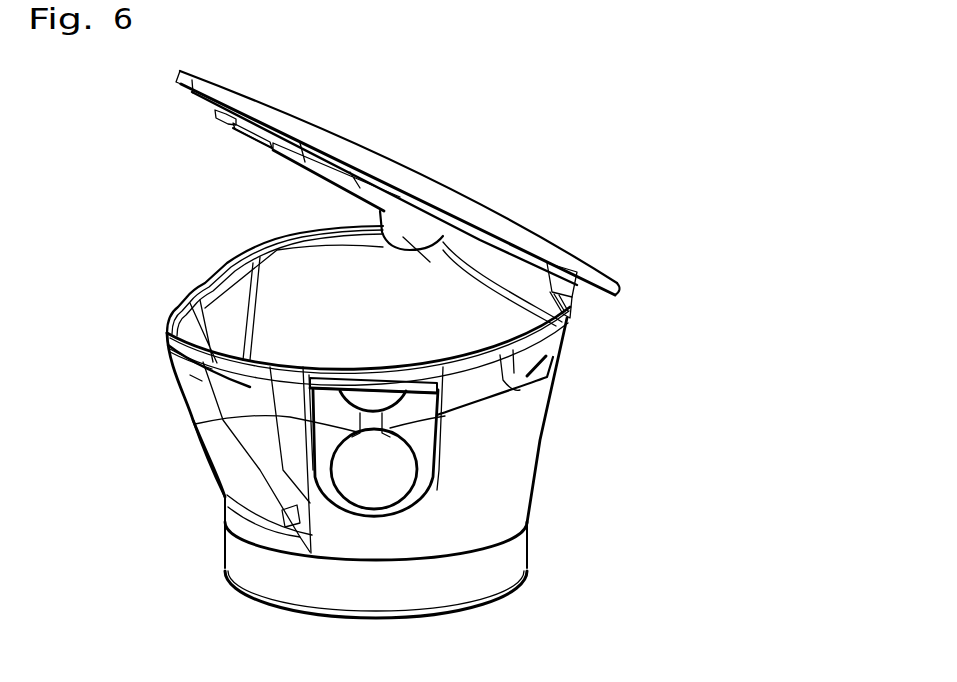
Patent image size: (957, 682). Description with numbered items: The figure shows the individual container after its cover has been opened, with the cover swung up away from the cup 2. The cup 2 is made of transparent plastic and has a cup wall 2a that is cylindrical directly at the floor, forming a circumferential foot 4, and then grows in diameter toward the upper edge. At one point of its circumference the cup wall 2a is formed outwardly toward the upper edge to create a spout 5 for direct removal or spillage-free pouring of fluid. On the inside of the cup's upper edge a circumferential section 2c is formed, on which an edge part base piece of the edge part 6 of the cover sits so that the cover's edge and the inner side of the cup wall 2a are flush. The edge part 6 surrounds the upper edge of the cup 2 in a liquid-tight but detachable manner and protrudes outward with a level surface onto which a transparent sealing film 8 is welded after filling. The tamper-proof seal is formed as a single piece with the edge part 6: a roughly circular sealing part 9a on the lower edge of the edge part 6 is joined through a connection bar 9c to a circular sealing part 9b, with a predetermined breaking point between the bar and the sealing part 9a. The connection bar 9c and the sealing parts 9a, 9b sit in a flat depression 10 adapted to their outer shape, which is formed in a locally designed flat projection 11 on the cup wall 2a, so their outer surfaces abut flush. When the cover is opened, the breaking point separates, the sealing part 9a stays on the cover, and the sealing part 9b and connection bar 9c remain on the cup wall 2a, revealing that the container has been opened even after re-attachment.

The cup 2 is at (593, 408).
The cup wall 2a is at (513, 432).
The circumferential section 2c is at (238, 258).
The circumferential foot 4 is at (228, 568).
The spout 5 is at (172, 348).
The edge part 6 is at (610, 283).
The sealing film 8 is at (497, 218).
The sealing part 9a is at (562, 312).
The sealing part 9b is at (382, 473).
The connection bar 9c is at (195, 413).
The flat depression 10 is at (433, 417).
The flat projection 11 is at (318, 461).